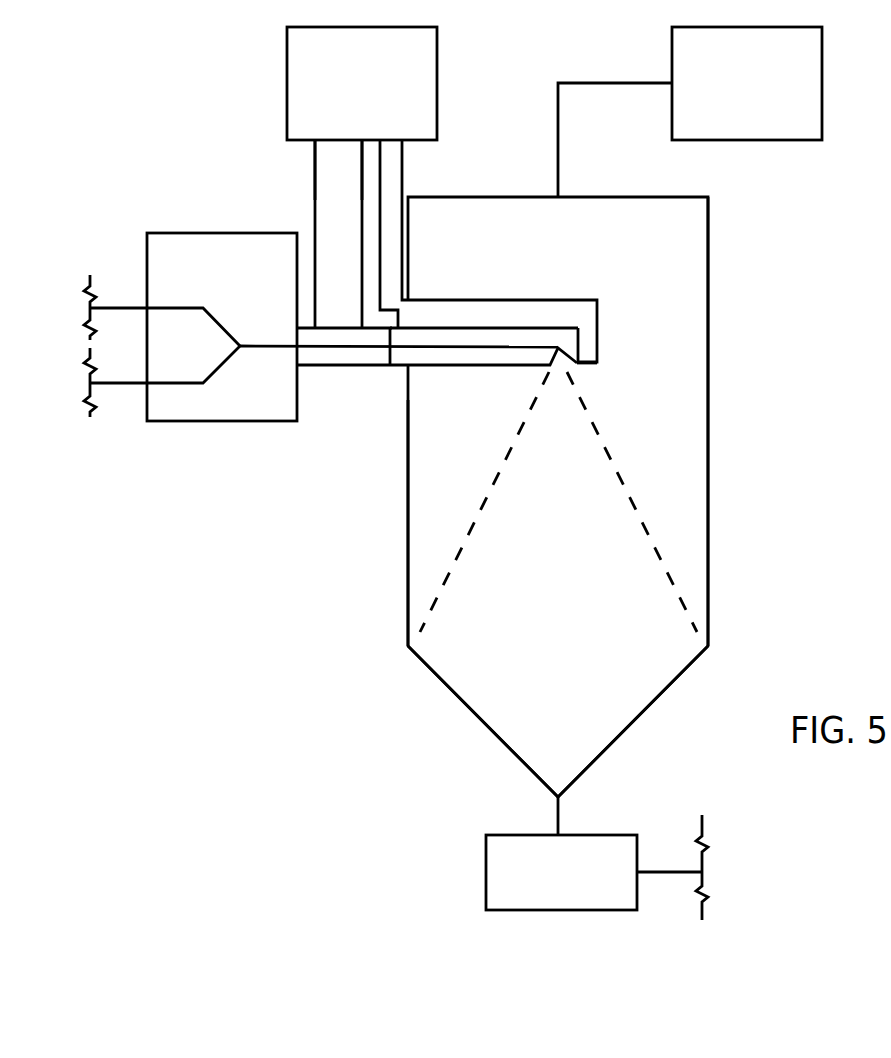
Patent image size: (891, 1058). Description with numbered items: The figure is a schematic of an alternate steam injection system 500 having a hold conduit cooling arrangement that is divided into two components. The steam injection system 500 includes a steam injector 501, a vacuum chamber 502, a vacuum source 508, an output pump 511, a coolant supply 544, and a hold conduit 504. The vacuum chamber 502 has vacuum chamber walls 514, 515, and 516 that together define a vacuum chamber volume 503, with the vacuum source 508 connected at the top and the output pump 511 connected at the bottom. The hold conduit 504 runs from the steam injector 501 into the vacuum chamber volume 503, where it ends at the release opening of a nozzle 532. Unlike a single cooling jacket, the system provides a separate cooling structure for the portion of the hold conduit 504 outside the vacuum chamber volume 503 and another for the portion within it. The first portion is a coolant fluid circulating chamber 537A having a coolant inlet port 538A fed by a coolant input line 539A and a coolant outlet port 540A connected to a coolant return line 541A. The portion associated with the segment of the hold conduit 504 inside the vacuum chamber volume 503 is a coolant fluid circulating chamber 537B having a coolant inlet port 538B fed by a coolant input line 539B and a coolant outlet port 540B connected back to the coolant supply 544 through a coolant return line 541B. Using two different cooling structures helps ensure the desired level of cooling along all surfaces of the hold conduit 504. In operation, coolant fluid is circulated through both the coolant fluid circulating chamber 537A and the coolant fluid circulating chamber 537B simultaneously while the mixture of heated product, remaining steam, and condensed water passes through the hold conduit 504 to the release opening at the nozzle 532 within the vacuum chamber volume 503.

The steam injection system 500 is at (323, 517).
The steam injector 501 is at (167, 421).
The vacuum chamber 502 is at (741, 239).
The vacuum chamber volume 503 is at (580, 253).
The hold conduit 504 is at (382, 347).
The vacuum source 508 is at (767, 126).
The output pump 511 is at (486, 863).
The vacuum chamber wall 514 is at (708, 385).
The vacuum chamber wall 515 is at (575, 197).
The vacuum chamber wall 516 is at (620, 738).
The nozzle 532 is at (558, 388).
The coolant fluid circulating chamber 537A is at (352, 372).
The coolant fluid circulating chamber 537B is at (485, 374).
The coolant inlet port 538A is at (313, 310).
The coolant inlet port 538B is at (402, 327).
The coolant input line 539A is at (313, 160).
The coolant input line 539B is at (382, 178).
The coolant outlet port 540A is at (360, 310).
The coolant outlet port 540B is at (578, 363).
The coolant return line 541A is at (362, 183).
The coolant return line 541B is at (597, 327).
The coolant supply 544 is at (380, 126).